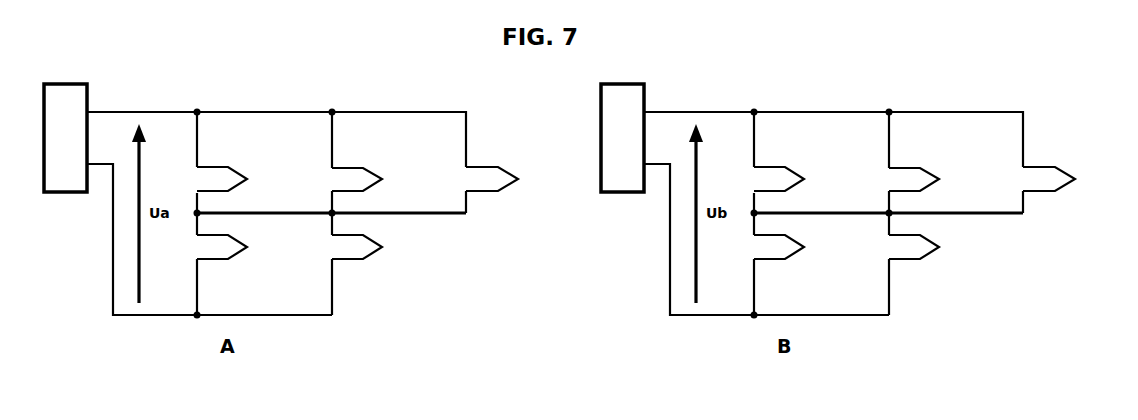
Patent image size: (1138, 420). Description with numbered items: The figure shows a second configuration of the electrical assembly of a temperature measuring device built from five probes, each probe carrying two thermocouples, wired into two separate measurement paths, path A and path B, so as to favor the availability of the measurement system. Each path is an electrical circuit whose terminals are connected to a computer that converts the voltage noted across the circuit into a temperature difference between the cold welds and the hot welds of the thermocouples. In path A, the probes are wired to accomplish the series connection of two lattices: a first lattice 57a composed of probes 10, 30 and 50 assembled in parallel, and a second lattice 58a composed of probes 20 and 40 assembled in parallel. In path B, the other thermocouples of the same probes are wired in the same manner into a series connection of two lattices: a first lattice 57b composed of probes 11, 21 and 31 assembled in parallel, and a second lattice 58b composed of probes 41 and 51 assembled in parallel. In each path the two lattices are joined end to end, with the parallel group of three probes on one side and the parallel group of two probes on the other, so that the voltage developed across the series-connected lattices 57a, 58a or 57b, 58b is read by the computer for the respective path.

The thermocouple probe 10 is at (235, 179).
The thermocouple probe 20 is at (235, 247).
The thermocouple probe 30 is at (370, 179).
The thermocouple probe 40 is at (370, 247).
The thermocouple probe 50 is at (504, 179).
The thermocouple probe 11 is at (792, 179).
The thermocouple probe 41 is at (792, 247).
The thermocouple probe 21 is at (927, 179).
The thermocouple probe 51 is at (927, 247).
The thermocouple probe 31 is at (1061, 179).
The first lattice 57a is at (268, 139).
The second lattice 58a is at (267, 289).
The first lattice 57b is at (804, 123).
The second lattice 58b is at (803, 307).